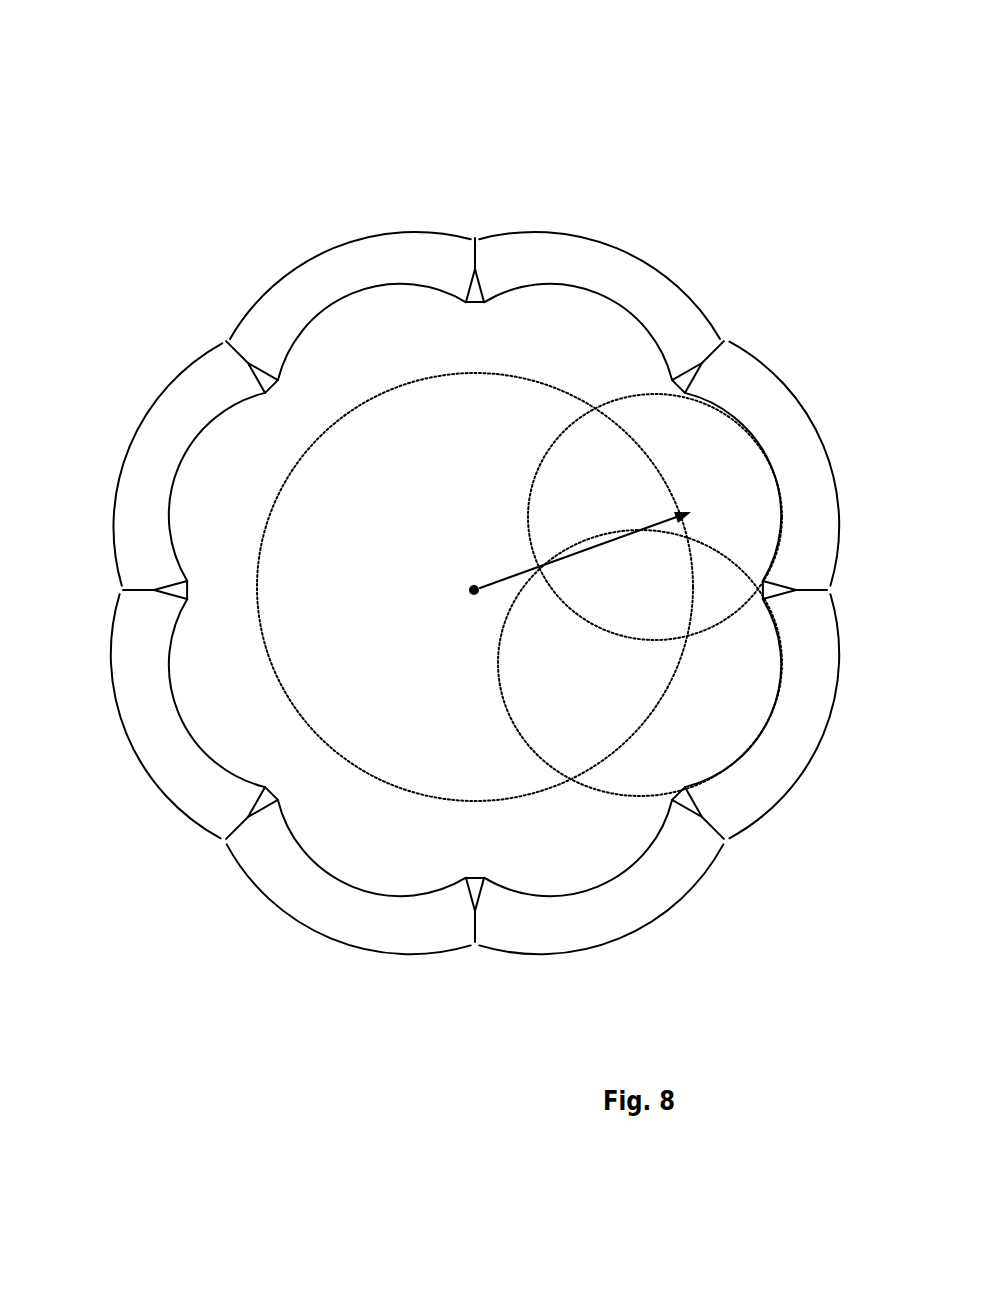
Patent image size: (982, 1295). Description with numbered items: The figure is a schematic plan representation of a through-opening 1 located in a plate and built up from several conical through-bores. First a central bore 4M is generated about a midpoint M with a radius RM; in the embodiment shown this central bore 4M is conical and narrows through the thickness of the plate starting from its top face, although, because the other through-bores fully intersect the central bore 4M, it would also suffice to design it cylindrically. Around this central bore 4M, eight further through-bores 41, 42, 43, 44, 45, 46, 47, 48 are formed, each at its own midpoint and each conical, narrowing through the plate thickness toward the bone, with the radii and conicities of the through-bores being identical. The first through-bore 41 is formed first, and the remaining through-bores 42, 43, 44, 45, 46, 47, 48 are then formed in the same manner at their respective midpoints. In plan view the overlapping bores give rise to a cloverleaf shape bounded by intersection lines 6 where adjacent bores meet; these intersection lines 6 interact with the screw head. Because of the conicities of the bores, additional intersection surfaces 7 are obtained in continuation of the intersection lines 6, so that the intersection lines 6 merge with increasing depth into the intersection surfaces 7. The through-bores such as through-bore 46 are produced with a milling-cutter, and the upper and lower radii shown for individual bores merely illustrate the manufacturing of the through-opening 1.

The through-opening 1 is at (316, 106).
The first through-bore 41 is at (228, 714).
The through-bore 42 is at (244, 500).
The through-bore 43 is at (363, 343).
The through-bore 44 is at (547, 343).
The through-bore 45 is at (720, 462).
The through-bore 46 is at (743, 677).
The through-bore 47 is at (587, 863).
The through-bore 48 is at (400, 817).
The central bore 4M is at (433, 677).
The intersection lines 6 is at (477, 248).
The intersection surfaces 7 is at (466, 306).
The midpoint M is at (462, 602).
The radius RM is at (475, 587).